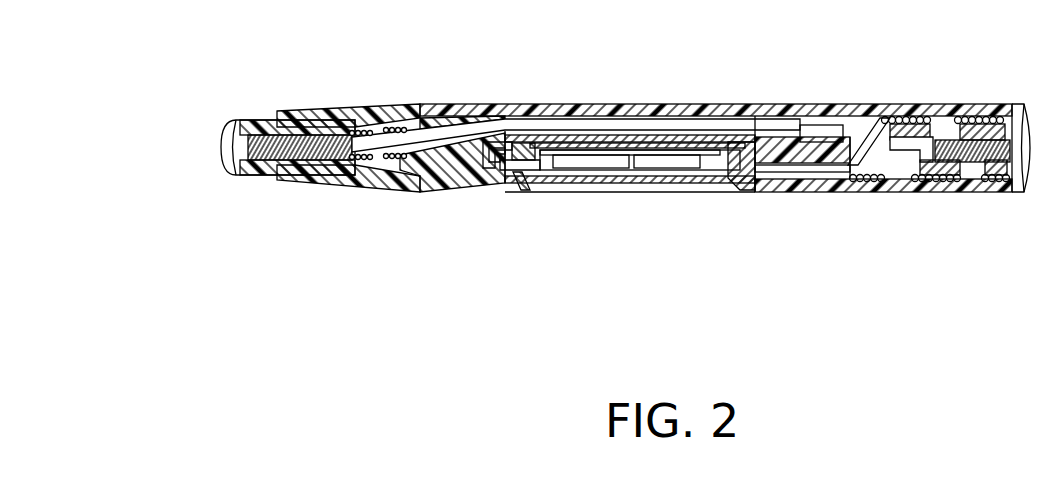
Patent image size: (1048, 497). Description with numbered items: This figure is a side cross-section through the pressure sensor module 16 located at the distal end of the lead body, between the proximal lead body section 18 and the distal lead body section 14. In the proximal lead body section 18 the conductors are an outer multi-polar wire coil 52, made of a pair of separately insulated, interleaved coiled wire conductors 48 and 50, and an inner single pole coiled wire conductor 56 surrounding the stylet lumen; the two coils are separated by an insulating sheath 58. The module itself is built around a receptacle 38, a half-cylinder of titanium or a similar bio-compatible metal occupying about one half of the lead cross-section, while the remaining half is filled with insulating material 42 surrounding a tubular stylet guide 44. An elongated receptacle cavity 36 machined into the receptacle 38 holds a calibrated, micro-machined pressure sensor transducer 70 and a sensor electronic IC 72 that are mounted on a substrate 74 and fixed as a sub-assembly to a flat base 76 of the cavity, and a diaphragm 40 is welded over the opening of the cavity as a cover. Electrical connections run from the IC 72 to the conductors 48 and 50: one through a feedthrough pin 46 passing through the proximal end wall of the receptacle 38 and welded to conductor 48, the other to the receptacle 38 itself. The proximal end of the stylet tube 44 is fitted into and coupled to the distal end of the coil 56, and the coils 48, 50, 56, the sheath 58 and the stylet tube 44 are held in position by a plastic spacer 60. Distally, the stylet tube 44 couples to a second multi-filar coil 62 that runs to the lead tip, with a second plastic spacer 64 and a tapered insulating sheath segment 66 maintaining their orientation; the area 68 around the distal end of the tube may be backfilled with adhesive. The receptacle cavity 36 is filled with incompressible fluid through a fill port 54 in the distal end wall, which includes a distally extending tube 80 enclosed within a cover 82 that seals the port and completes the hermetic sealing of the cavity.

The distal lead body section 14 is at (262, 122).
The pressure sensor module 16 is at (614, 258).
The proximal lead body section 18 is at (958, 193).
The receptacle cavity 36 is at (712, 172).
The receptacle 38 is at (738, 190).
The diaphragm 40 is at (690, 172).
The insulating material 42 is at (540, 104).
The stylet guide 44 is at (778, 122).
The feedthrough pin 46 is at (766, 190).
The coiled wire conductor 48 is at (856, 133).
The coiled wire conductor 50 is at (880, 124).
The outer multi-polar wire coil 52 is at (972, 118).
The fill port 54 is at (535, 172).
The inner single pole coiled wire conductor 56 is at (945, 182).
The insulating sheath 58 is at (978, 183).
The plastic spacer 60 is at (890, 123).
The second multi-filar coil 62 is at (262, 175).
The second plastic spacer 64 is at (420, 190).
The tapered insulating sheath segment 66 is at (352, 185).
The area surrounding the distal end of the stylet tube 68 is at (383, 152).
The pressure sensor transducer 70 is at (650, 167).
The sensor electronic IC 72 is at (605, 167).
The substrate 74 is at (638, 150).
The flat base 76 is at (588, 142).
The distally extending tube 80 is at (483, 185).
The cover 82 is at (482, 193).